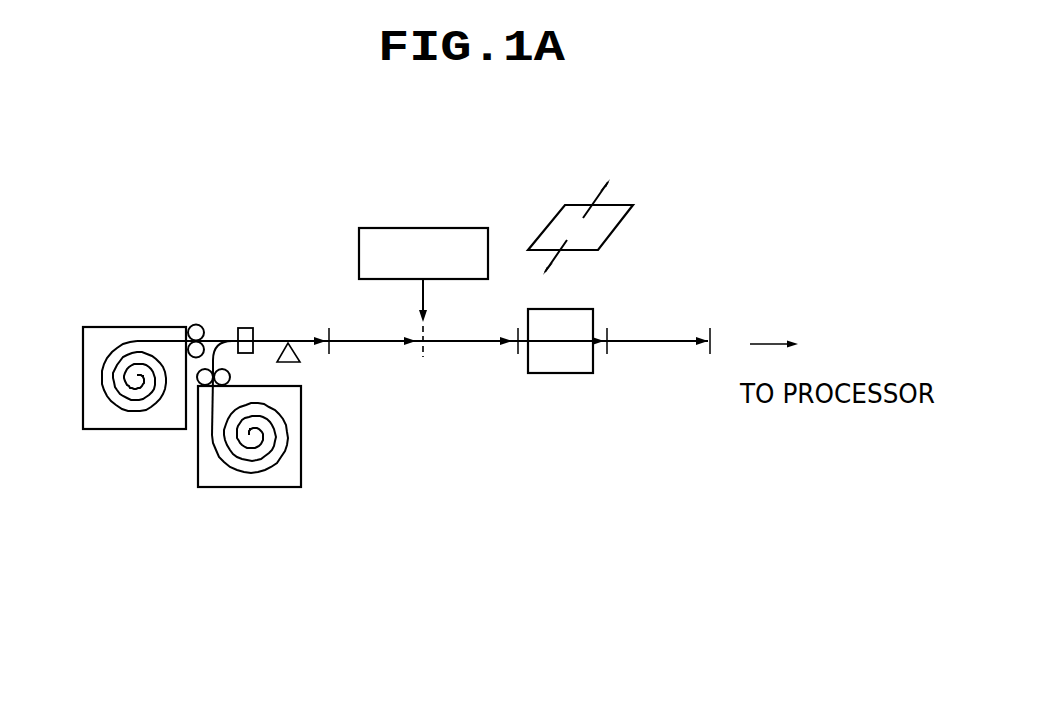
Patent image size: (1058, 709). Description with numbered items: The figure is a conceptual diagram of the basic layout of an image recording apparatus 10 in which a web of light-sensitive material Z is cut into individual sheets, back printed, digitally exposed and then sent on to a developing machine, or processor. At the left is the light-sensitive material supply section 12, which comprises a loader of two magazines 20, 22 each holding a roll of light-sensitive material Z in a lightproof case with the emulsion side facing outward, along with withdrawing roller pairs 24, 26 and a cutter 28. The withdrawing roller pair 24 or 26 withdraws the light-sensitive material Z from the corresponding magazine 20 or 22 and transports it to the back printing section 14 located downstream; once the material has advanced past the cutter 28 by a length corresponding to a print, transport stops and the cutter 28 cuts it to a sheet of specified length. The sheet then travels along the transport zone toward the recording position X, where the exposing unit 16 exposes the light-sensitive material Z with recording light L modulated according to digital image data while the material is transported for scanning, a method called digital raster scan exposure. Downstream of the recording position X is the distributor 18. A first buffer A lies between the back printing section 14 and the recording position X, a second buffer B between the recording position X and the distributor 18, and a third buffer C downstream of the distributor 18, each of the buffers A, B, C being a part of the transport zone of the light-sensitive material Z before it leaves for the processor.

The recording apparatus 10 is at (799, 219).
The light-sensitive material supply section 12 is at (246, 243).
The back printing section 14 is at (287, 320).
The exposing unit 16 is at (458, 242).
The distributor 18 is at (572, 358).
The magazine 20 is at (150, 428).
The magazine 22 is at (227, 490).
The withdrawing roller pair 24 is at (192, 326).
The withdrawing roller pair 26 is at (207, 369).
The cutter 28 is at (243, 328).
The first buffer A is at (360, 344).
The second buffer B is at (467, 344).
The third buffer C is at (663, 341).
The recording light L is at (425, 293).
The recording position X is at (423, 366).
The light-sensitive material Z is at (105, 406).